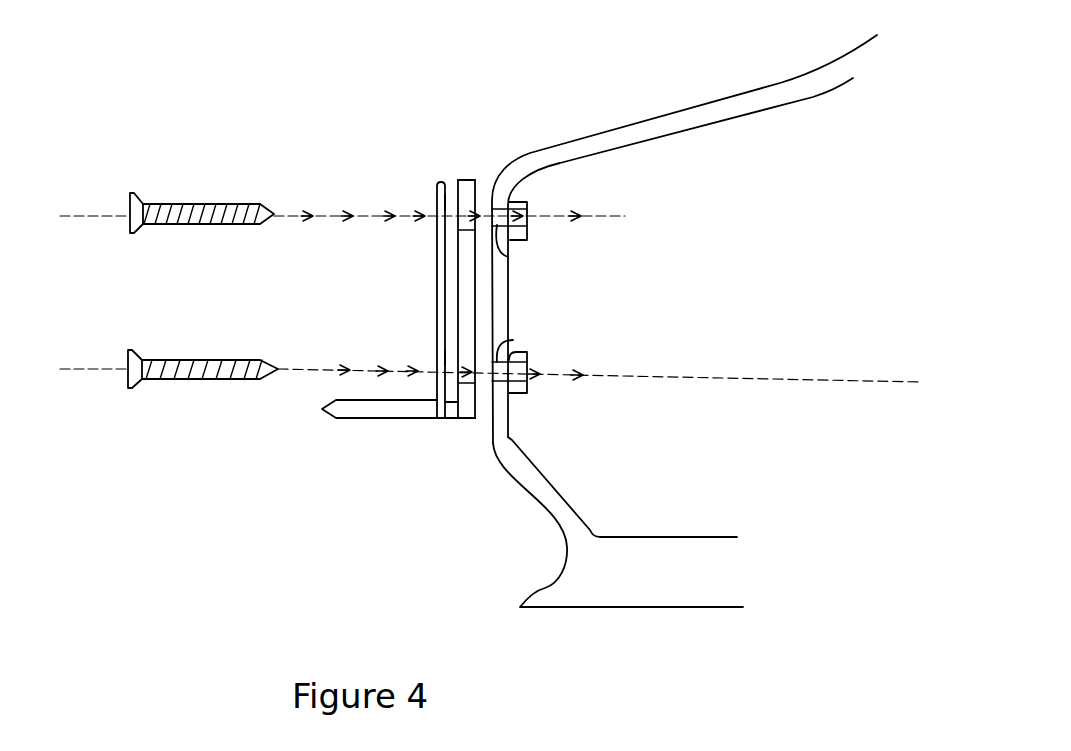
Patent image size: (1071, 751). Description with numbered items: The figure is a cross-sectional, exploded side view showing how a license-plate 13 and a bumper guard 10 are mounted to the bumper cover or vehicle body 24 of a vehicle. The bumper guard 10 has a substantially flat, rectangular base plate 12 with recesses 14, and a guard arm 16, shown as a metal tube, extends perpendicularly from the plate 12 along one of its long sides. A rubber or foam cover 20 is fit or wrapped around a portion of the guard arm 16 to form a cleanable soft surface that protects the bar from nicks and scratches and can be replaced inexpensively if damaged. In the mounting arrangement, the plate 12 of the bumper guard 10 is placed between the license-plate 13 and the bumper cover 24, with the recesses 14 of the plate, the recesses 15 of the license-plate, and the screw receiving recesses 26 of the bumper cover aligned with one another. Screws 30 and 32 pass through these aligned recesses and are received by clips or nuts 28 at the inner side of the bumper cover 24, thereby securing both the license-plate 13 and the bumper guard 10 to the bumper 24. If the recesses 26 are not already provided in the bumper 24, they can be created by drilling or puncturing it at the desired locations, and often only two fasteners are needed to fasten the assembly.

The bumper guard 10 is at (474, 110).
The base plate 12 is at (472, 307).
The license-plate 13 is at (440, 255).
The recess 14 is at (460, 183).
The recess 15 is at (437, 200).
The guard arm 16 is at (450, 420).
The cover 20 is at (343, 410).
The bumper cover 24 is at (500, 298).
The screw receiving recess 26 is at (508, 257).
The clip or nut 28 is at (523, 203).
The screw 30 is at (153, 202).
The screw 32 is at (146, 357).